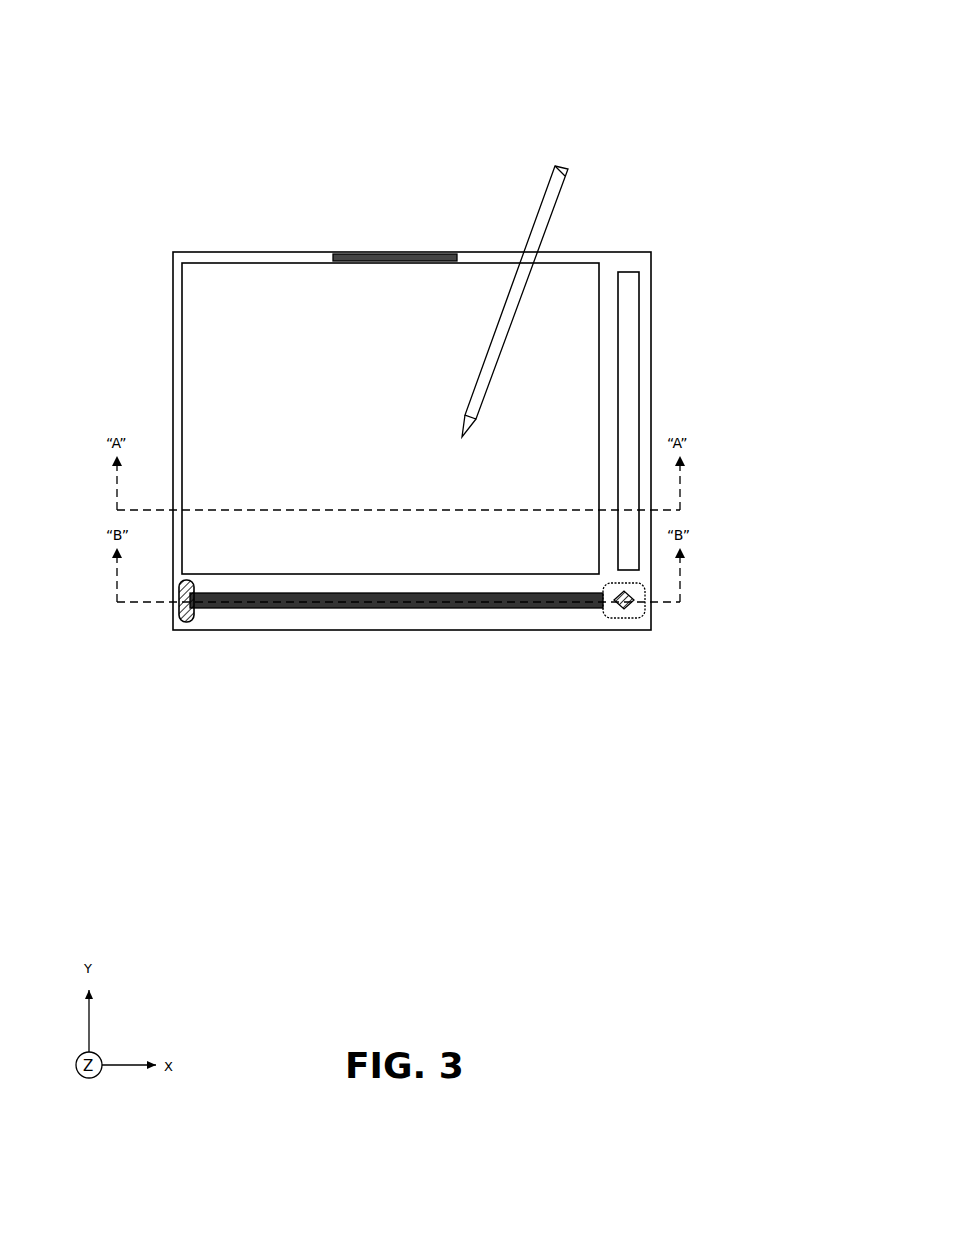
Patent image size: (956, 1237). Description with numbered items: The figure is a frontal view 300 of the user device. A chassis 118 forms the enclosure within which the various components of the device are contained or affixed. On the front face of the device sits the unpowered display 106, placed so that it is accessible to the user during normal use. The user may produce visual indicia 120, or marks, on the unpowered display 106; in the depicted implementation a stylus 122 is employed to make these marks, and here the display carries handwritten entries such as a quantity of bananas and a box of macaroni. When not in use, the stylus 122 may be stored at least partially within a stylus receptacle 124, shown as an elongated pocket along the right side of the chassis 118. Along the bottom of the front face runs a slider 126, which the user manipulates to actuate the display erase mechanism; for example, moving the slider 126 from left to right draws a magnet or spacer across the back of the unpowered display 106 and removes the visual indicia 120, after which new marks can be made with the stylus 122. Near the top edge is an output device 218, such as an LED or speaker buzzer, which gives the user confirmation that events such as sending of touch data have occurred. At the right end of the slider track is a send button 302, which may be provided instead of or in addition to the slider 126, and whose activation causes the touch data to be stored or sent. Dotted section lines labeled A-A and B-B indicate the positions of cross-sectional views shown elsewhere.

The frontal view 300 is at (623, 46).
The chassis 118 is at (197, 251).
The unpowered display 106 is at (227, 298).
The visual indicia 120 is at (233, 373).
The output device 218 is at (394, 254).
The stylus 122 is at (557, 178).
The stylus receptacle 124 is at (628, 272).
The slider 126 is at (188, 622).
The send button 302 is at (625, 618).